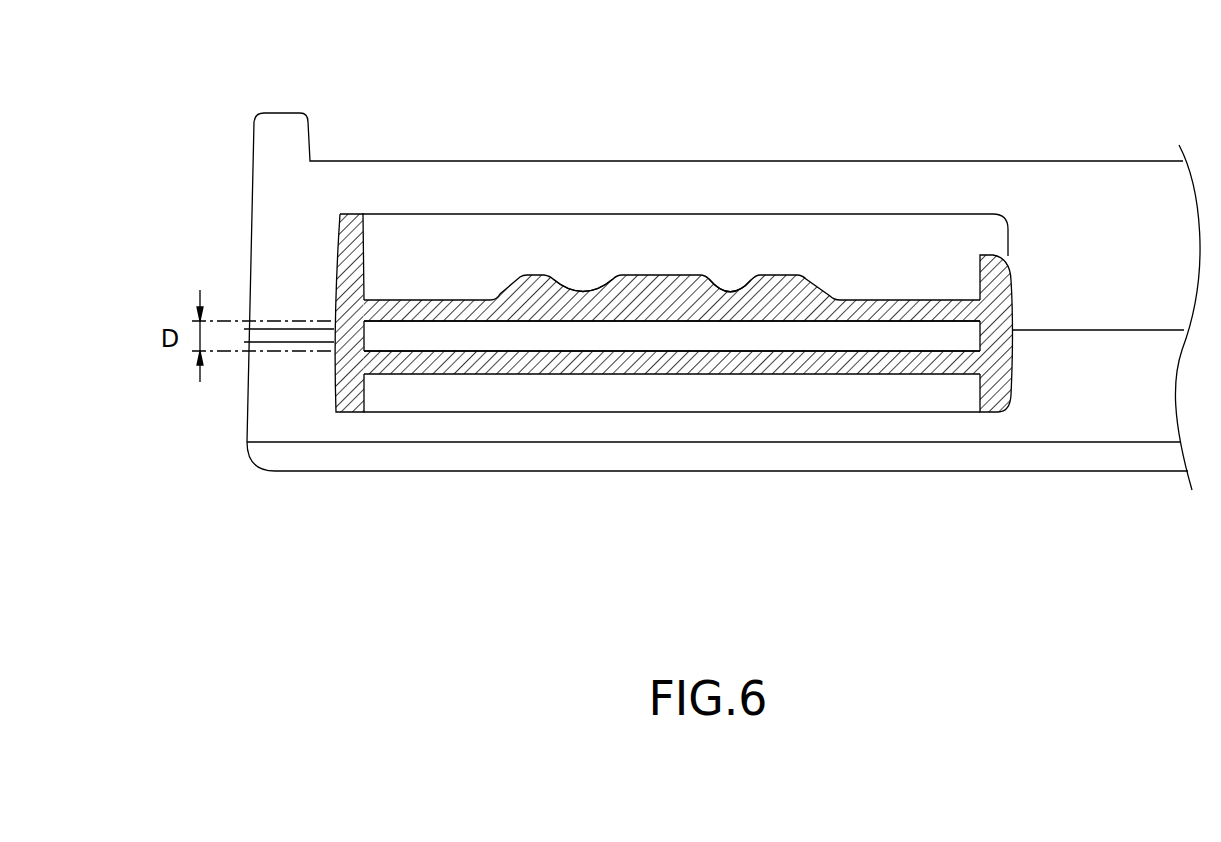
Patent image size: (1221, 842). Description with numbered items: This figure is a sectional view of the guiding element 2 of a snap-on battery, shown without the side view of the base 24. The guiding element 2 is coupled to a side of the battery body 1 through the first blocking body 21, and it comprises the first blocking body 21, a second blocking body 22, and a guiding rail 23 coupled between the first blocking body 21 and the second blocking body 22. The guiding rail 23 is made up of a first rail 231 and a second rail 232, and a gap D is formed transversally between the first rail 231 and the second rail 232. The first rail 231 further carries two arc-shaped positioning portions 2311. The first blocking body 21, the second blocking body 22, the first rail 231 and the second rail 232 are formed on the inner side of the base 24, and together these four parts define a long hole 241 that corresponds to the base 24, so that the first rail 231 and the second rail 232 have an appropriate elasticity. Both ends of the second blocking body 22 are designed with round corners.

The battery body 1 is at (510, 161).
The guiding element 2 is at (1017, 287).
The first blocking body 21 is at (336, 385).
The second blocking body 22 is at (992, 411).
The guiding rail 23 is at (672, 439).
The first rail 231 is at (891, 310).
The arc-shaped positioning portions 2311 is at (730, 284).
The second rail 232 is at (762, 372).
The base 24 is at (410, 400).
The long hole 241 is at (527, 337).